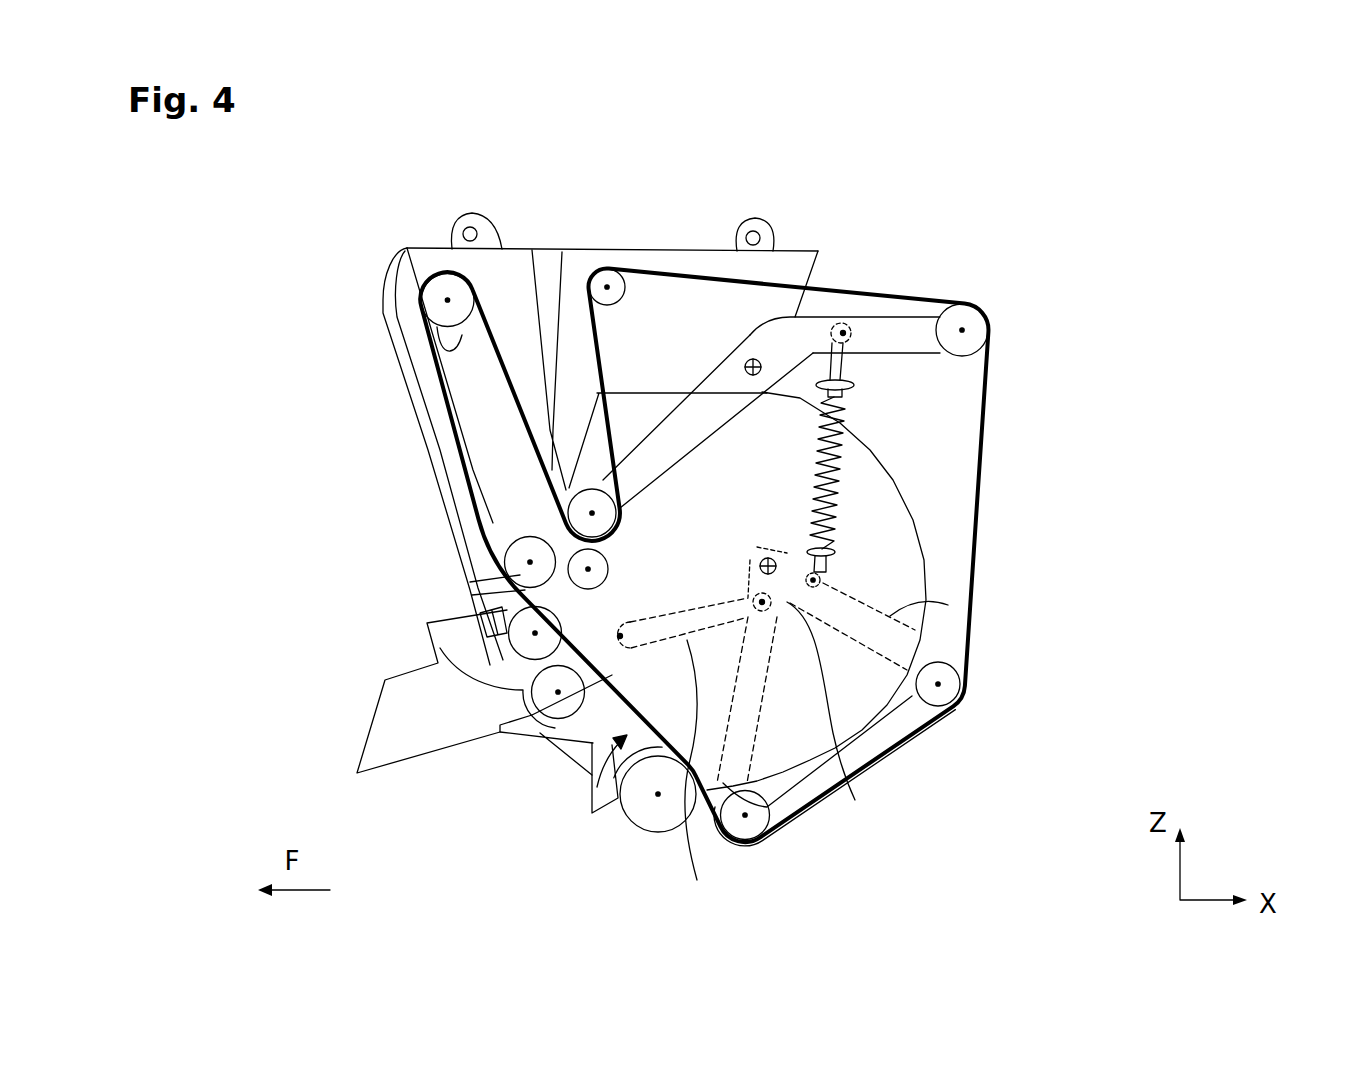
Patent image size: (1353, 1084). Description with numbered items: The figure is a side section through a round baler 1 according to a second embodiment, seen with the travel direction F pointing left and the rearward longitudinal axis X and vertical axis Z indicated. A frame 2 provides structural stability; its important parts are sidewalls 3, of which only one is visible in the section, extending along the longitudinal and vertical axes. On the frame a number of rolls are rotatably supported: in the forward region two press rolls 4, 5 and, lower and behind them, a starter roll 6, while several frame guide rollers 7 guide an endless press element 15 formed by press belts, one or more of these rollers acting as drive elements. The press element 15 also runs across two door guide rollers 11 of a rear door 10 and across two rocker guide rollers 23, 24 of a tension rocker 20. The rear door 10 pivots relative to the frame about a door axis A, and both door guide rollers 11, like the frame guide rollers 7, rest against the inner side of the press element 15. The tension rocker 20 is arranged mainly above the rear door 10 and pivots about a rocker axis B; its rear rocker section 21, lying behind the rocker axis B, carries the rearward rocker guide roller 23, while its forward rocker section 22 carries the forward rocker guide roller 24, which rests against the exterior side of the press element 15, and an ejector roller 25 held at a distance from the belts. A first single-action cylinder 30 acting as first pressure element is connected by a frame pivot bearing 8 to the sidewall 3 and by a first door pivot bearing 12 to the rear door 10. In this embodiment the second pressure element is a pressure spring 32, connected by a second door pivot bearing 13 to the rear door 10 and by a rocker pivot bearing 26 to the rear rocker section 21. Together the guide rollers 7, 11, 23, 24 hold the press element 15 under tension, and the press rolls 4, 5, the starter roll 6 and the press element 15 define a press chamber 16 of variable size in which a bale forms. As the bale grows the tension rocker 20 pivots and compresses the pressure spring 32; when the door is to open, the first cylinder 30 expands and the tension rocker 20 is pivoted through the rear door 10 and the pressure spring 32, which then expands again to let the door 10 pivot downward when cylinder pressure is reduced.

The round baler 1 is at (1057, 211).
The frame 2 is at (562, 250).
The sidewall 3 is at (580, 768).
The press roll 4 is at (497, 610).
The press roll 5 is at (440, 648).
The starter roll 6 is at (640, 835).
The frame guide rollers 7 is at (638, 282).
The frame pivot bearing 8 is at (582, 708).
The rear door 10 is at (926, 604).
The door guide rollers 11 is at (787, 822).
The first door pivot bearing 12 is at (790, 612).
The second door pivot bearing 13 is at (822, 578).
The press element 15 is at (988, 435).
The press chamber 16 is at (597, 807).
The tension rocker 20 is at (832, 322).
The rear rocker section 21 is at (900, 364).
The forward rocker section 22 is at (698, 468).
The rearward rocker guide roller 23 is at (990, 362).
The forward rocker guide roller 24 is at (532, 250).
The ejector roller 25 is at (608, 577).
The rocker pivot bearing 26 is at (848, 330).
The first single-action cylinder 30 is at (683, 753).
The pressure spring 32 is at (838, 497).
The door axis A is at (768, 556).
The rocker axis B is at (752, 357).